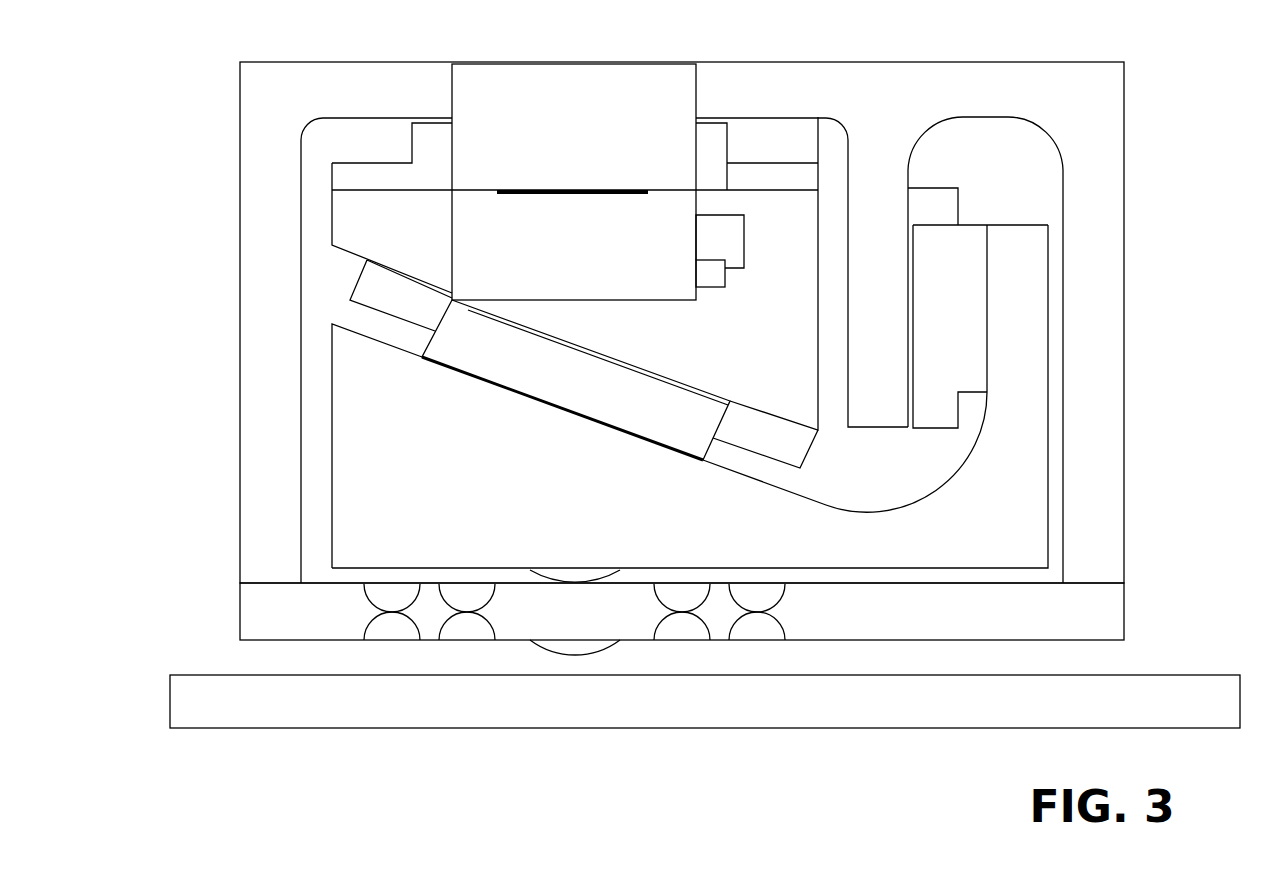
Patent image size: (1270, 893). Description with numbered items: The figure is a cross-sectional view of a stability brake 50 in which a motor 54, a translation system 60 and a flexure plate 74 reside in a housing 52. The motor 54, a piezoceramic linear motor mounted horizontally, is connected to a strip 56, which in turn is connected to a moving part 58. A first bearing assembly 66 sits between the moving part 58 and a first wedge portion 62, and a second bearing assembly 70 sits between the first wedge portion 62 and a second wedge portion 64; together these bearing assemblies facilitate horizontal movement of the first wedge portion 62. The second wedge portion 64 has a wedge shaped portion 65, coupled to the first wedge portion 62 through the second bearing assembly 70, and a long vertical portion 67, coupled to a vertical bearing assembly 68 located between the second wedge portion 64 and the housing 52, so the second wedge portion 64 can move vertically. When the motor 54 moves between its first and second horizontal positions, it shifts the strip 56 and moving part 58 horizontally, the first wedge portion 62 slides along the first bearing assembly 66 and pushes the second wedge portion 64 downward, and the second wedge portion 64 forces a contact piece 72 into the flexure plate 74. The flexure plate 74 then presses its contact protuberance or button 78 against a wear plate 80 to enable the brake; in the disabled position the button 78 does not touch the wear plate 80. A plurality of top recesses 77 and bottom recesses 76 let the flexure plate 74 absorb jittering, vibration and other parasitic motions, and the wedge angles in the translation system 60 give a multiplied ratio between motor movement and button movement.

The stability brake 50 is at (1157, 111).
The housing 52 is at (979, 62).
The motor 54 is at (546, 141).
The strip 56 is at (712, 287).
The moving part 58 is at (745, 240).
The translation system 60 is at (328, 312).
The first wedge portion 62 is at (711, 343).
The second wedge portion 64 is at (636, 504).
The wedge shaped portion 65 is at (364, 464).
The first bearing assembly 66 is at (393, 108).
The long vertical portion 67 is at (998, 368).
The vertical bearing assembly 68 is at (975, 202).
The second bearing assembly 70 is at (548, 413).
The contact piece 72 is at (570, 575).
The flexure plate 74 is at (1127, 608).
The bottom recesses 76 is at (378, 644).
The top recesses 77 is at (378, 599).
The contact protuberance or button 78 is at (556, 648).
The wear plate 80 is at (1133, 674).